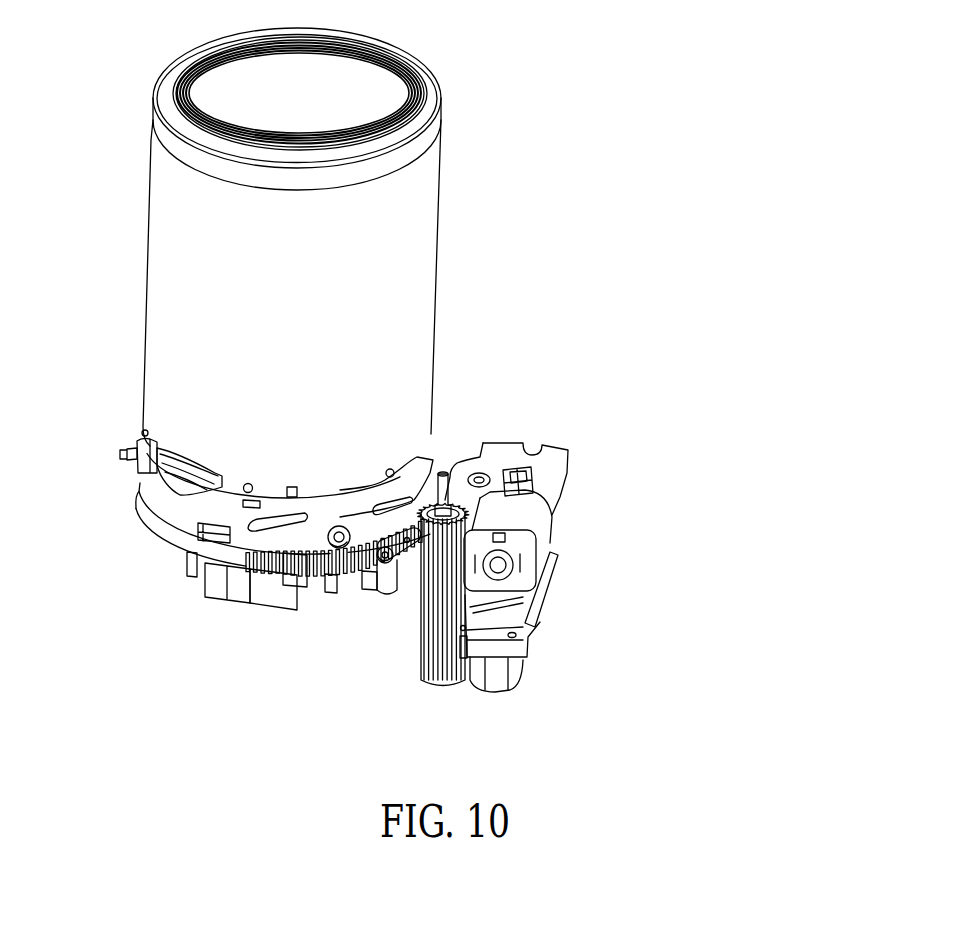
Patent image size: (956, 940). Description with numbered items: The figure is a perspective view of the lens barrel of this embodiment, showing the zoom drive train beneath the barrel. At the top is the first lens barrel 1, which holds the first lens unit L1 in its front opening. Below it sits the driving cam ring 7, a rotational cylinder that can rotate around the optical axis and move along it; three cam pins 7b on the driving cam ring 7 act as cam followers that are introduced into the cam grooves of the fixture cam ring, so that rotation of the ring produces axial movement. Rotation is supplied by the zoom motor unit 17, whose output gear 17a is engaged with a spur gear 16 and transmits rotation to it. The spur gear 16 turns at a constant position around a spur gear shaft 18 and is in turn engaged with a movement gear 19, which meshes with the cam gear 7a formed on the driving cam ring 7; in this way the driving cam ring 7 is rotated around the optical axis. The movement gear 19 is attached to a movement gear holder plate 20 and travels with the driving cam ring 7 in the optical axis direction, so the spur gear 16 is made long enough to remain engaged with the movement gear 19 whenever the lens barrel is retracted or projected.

The first lens barrel 1 is at (438, 252).
The first lens unit L1 is at (343, 83).
The driving cam ring 7 is at (183, 507).
The cam gear 7a is at (267, 573).
The cam pin 7b is at (121, 455).
The spur gear 16 is at (418, 675).
The zoom motor unit 17 is at (550, 463).
The output gear 17a is at (465, 645).
The spur gear shaft 18 is at (447, 473).
The movement gear 19 is at (408, 575).
The movement gear holder plate 20 is at (353, 565).